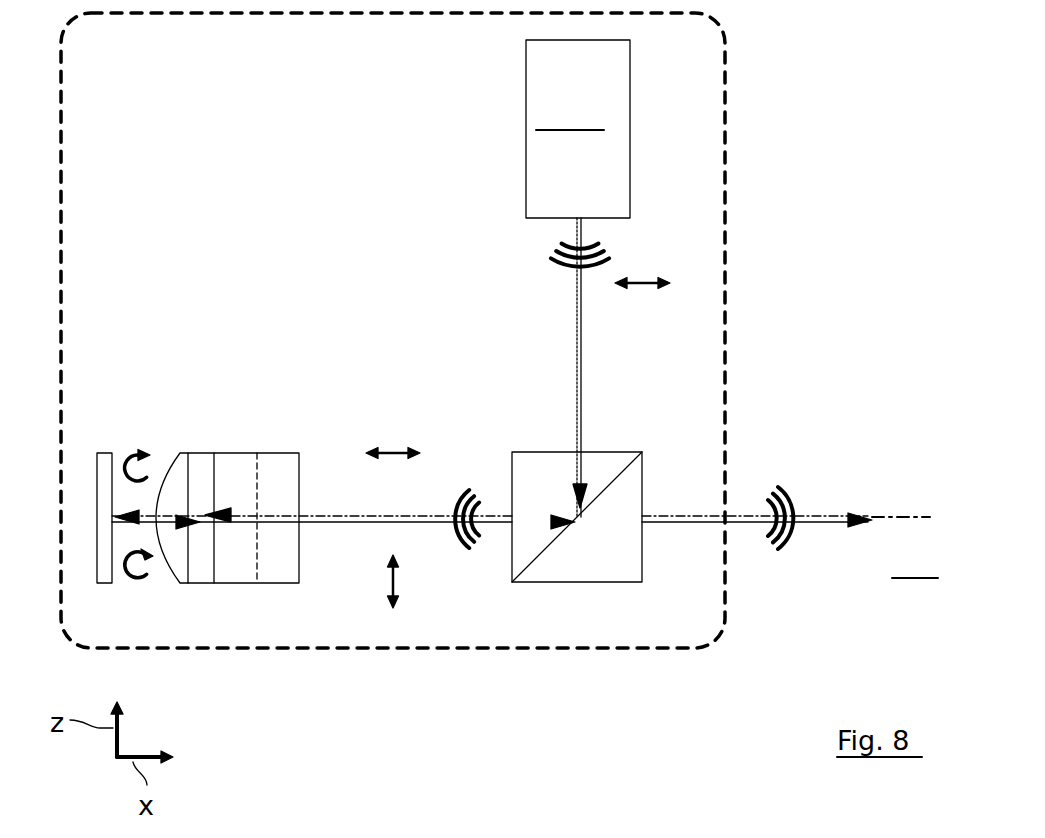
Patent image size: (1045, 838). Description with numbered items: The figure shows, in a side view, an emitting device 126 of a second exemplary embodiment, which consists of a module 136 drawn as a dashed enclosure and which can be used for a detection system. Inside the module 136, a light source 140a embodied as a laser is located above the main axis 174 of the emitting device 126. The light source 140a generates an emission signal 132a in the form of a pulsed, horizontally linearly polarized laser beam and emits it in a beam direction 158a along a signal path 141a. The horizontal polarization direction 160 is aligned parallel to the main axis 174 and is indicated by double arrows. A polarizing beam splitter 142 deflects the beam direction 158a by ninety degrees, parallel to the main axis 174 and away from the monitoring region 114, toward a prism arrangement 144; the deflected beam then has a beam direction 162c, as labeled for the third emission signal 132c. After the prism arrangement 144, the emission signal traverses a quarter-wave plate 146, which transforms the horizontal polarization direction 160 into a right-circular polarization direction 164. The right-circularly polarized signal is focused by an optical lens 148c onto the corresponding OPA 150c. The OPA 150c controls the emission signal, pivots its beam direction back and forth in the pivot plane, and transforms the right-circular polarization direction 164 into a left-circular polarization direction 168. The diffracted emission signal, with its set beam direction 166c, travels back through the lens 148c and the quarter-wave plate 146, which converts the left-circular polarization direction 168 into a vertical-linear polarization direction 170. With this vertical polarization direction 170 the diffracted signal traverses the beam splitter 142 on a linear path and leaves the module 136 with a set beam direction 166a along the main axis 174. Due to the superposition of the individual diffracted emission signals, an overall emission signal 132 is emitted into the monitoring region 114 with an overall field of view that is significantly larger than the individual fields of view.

The emitting device 126 is at (877, 68).
The module 136 is at (727, 64).
The light source 140a is at (578, 129).
The emission signal 132a is at (557, 262).
The emission signal 132c is at (462, 498).
The overall emission signal 132 is at (786, 496).
The beam direction 158a is at (578, 303).
The signal path 141a is at (582, 352).
The polarizing beam splitter 142 is at (610, 466).
The prism arrangement 144 is at (252, 455).
The quarter-wave plate 146 is at (200, 455).
The optical lens 148c is at (175, 455).
The OPA 150c is at (103, 583).
The horizontal polarization direction 160 is at (652, 280).
The beam direction 162c is at (340, 513).
The right-circular polarization direction 164 is at (128, 459).
The set beam direction 166a is at (832, 524).
The set beam direction 166c is at (357, 524).
The left-circular polarization direction 168 is at (135, 583).
The vertical-linear polarization direction 170 is at (397, 577).
The main axis 174 is at (922, 517).
The monitoring region 114 is at (918, 562).